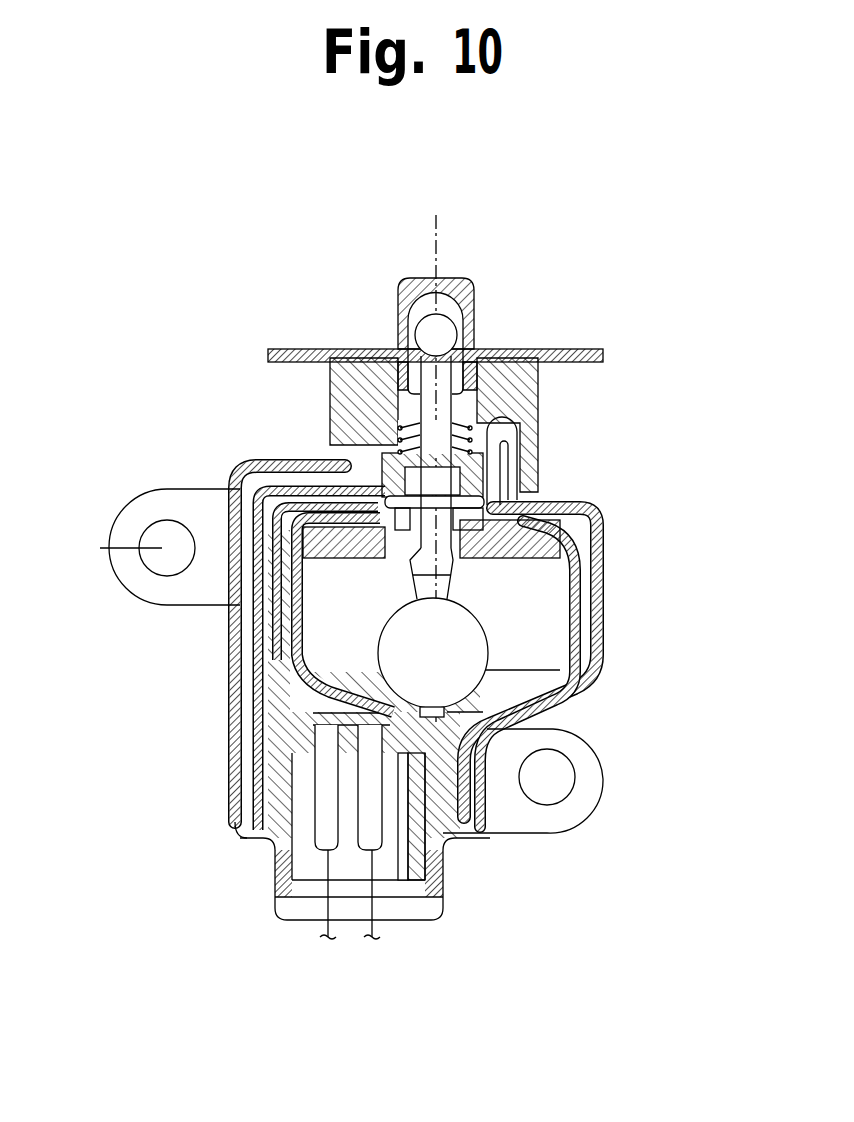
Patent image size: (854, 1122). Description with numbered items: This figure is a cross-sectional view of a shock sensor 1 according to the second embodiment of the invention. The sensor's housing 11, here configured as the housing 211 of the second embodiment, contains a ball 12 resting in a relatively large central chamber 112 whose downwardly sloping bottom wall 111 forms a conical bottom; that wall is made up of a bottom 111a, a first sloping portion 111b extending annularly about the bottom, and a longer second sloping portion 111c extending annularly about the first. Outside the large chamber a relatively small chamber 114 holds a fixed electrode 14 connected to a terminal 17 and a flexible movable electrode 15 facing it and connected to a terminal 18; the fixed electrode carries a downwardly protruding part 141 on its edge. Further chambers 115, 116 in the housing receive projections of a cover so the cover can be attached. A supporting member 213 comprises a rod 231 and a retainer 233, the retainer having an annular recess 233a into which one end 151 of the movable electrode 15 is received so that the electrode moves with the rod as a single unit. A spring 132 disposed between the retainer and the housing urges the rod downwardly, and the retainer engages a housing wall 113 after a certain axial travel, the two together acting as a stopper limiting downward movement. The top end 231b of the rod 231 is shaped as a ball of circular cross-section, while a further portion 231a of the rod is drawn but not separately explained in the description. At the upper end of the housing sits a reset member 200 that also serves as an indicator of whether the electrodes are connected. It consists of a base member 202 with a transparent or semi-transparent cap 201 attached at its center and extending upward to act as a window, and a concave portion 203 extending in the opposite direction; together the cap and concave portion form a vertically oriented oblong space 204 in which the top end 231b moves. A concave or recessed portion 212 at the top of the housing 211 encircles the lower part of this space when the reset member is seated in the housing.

The shock sensor 1 is at (238, 438).
The housing 11 is at (443, 229).
The ball 12 is at (570, 722).
The fixed electrode 14 is at (240, 554).
The movable electrode 15 is at (296, 640).
The terminal 17 is at (326, 832).
The terminal 18 is at (376, 826).
The downwardly sloping bottom wall 111 is at (282, 665).
The bottom 111a is at (455, 752).
The first sloping portion 111b is at (238, 826).
The second sloping portion 111c is at (290, 722).
The chamber 112 is at (578, 612).
The housing wall 113 is at (285, 625).
The small chamber 114 is at (272, 532).
The chamber 115 is at (247, 592).
The chamber 116 is at (586, 637).
The spring 132 is at (398, 428).
The protruding part 141 is at (258, 470).
The end of movable electrode 151 is at (512, 512).
The reset member 200 is at (482, 292).
The cap 201 is at (445, 310).
The base member 202 is at (607, 353).
The concave portion 203 is at (468, 392).
The oblong space 204 is at (470, 280).
The housing 211 is at (607, 653).
The concave portion 212 is at (478, 372).
The supporting member 213 is at (458, 348).
The rod 231 is at (470, 540).
The valve head 231a is at (452, 585).
The top end of rod 231b is at (408, 290).
The retainer 233 is at (338, 372).
The annular recess 233a is at (384, 470).